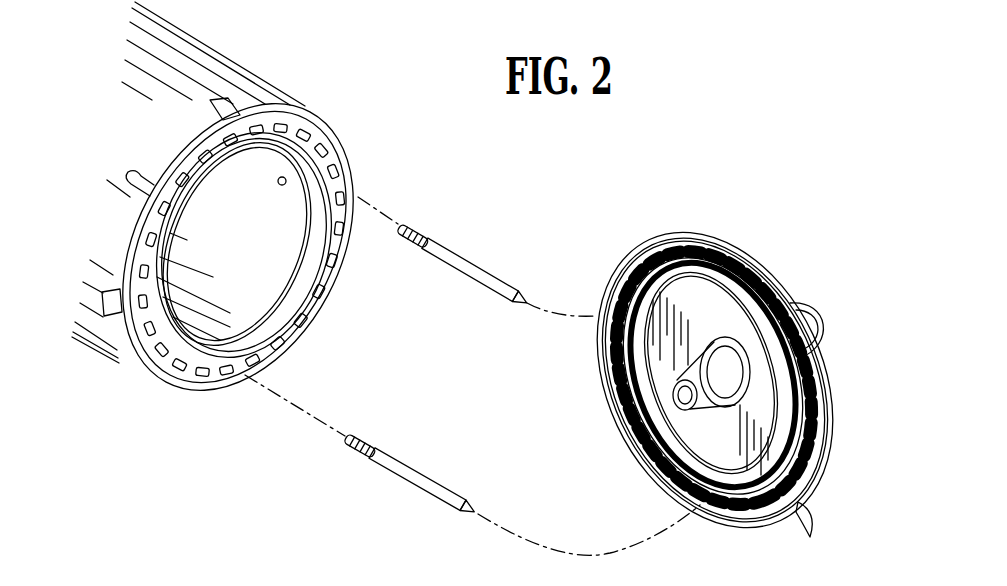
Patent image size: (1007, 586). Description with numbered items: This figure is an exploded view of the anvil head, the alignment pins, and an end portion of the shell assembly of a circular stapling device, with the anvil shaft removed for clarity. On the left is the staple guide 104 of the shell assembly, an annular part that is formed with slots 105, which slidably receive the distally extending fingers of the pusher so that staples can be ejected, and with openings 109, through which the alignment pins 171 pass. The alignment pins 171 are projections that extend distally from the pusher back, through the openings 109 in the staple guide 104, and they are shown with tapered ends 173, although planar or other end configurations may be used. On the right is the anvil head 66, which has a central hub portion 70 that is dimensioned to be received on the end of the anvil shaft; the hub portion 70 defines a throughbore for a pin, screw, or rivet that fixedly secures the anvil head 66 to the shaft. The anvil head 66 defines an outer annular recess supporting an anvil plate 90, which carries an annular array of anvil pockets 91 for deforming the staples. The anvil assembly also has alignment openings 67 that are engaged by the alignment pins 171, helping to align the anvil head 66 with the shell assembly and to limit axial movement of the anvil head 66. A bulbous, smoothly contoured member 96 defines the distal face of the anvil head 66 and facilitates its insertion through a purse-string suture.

The slots 105 is at (355, 152).
The openings 109 is at (262, 143).
The staple guide 104 is at (147, 378).
The alignment pins 171 is at (462, 256).
The tapered ends 173 is at (524, 300).
The anvil head 66 is at (770, 293).
The anvil plate 90 is at (668, 250).
The alignment openings 67 is at (700, 262).
The central hub portion 70 is at (680, 378).
The bulbous member 96 is at (830, 326).
The anvil pockets 91 is at (806, 517).